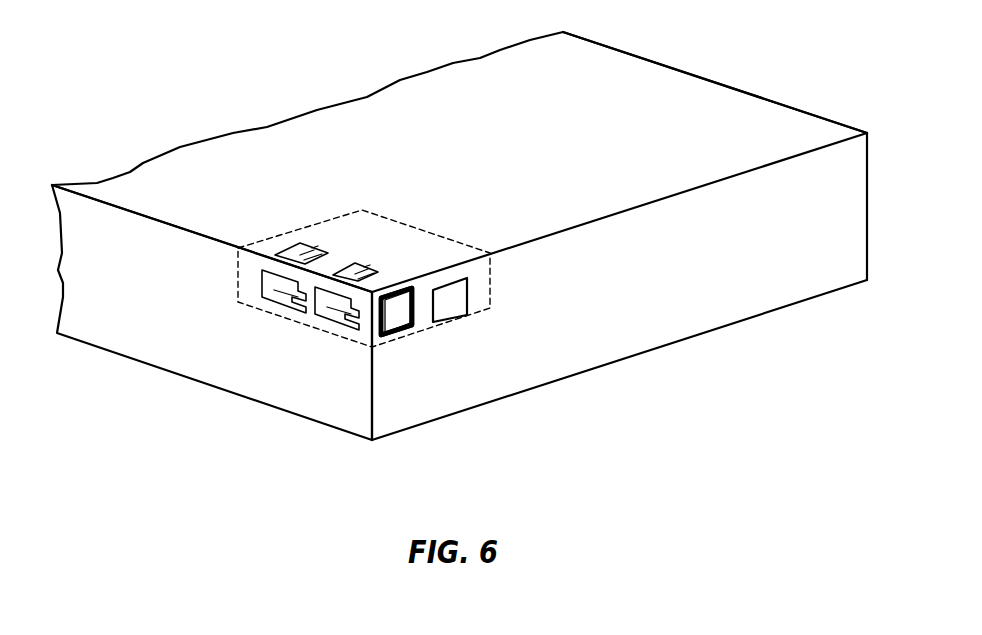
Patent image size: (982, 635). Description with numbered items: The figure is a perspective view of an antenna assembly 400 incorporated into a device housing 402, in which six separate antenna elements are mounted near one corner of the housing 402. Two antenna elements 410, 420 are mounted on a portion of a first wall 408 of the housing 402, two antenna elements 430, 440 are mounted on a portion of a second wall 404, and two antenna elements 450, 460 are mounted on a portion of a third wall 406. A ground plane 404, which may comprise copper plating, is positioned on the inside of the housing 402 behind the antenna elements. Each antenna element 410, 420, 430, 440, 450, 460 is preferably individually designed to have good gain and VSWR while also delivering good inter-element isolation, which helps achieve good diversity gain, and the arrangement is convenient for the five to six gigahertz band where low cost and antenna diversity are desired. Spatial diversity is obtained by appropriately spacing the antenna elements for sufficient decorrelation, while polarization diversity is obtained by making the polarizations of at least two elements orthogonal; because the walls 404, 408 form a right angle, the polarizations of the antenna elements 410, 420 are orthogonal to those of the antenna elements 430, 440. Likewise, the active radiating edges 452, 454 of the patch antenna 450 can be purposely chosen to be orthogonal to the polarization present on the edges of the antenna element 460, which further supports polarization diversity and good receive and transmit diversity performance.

The antenna assembly 400 is at (370, 188).
The housing 402 is at (652, 58).
The second wall 404 is at (322, 220).
The third wall 406 is at (425, 410).
The first wall 408 is at (758, 113).
The antenna element 410 is at (290, 250).
The antenna element 420 is at (362, 262).
The antenna element 430 is at (273, 296).
The antenna element 440 is at (325, 311).
The patch antenna 450 is at (401, 310).
The active edge 452 is at (401, 290).
The active edge 454 is at (396, 340).
The antenna element 460 is at (462, 295).